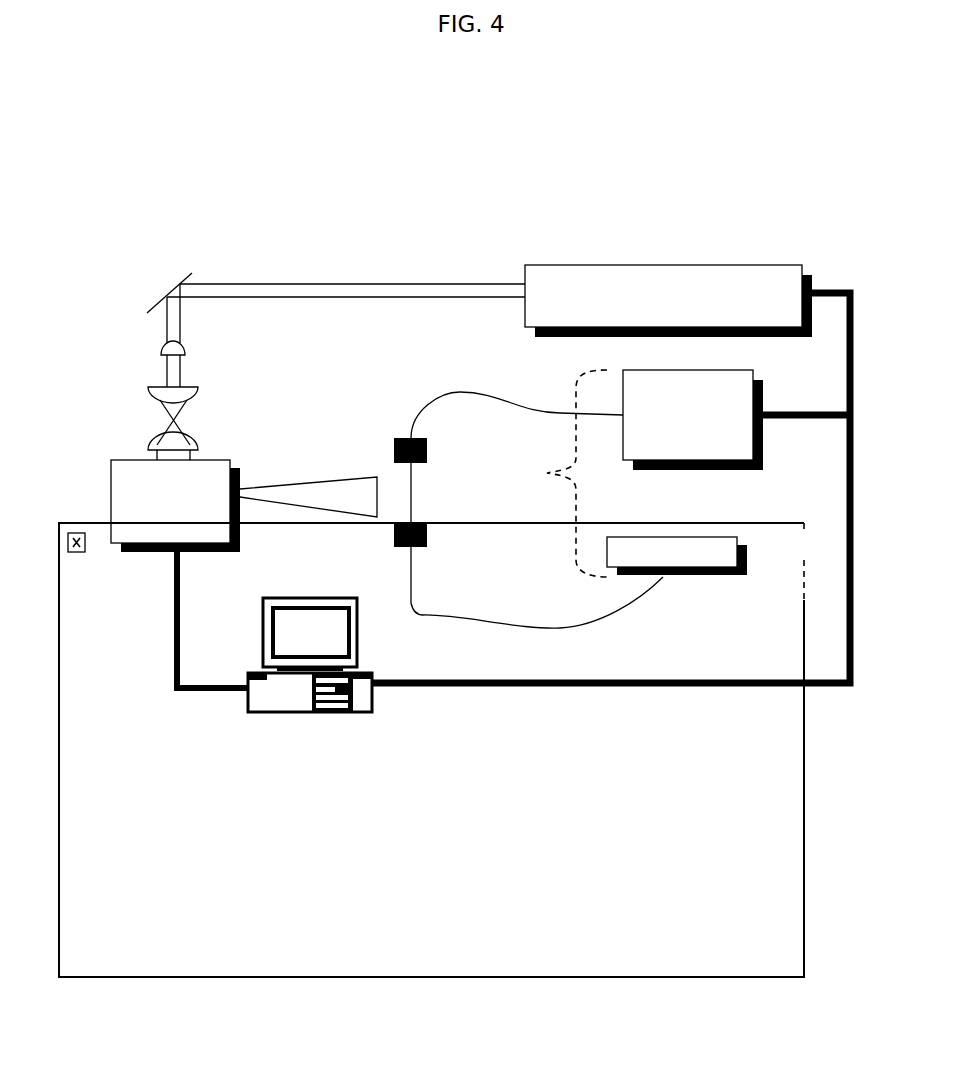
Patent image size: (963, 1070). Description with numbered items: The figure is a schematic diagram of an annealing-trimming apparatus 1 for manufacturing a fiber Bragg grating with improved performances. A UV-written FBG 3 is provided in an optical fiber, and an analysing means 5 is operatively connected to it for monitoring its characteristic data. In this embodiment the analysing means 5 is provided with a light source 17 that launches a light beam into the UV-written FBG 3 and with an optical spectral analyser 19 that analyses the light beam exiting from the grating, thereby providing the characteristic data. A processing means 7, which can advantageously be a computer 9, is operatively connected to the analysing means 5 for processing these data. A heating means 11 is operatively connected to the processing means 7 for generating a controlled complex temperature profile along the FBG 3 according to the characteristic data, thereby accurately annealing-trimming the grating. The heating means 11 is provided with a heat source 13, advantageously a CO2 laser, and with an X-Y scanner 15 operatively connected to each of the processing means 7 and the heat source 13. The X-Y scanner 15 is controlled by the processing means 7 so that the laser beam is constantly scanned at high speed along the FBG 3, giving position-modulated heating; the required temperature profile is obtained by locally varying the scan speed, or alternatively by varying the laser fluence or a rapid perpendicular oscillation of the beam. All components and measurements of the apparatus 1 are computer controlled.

The annealing-trimming apparatus 1 is at (470, 138).
The UV-written FBG 3 is at (411, 478).
The analysing means 5 is at (524, 479).
The processing means 7 is at (323, 729).
The computer 9 is at (360, 698).
The heating means 11 is at (553, 238).
The heat source 13 is at (747, 282).
The X-Y scanner 15 is at (120, 488).
The light source 17 is at (717, 552).
The optical spectral analyser 19 is at (728, 443).